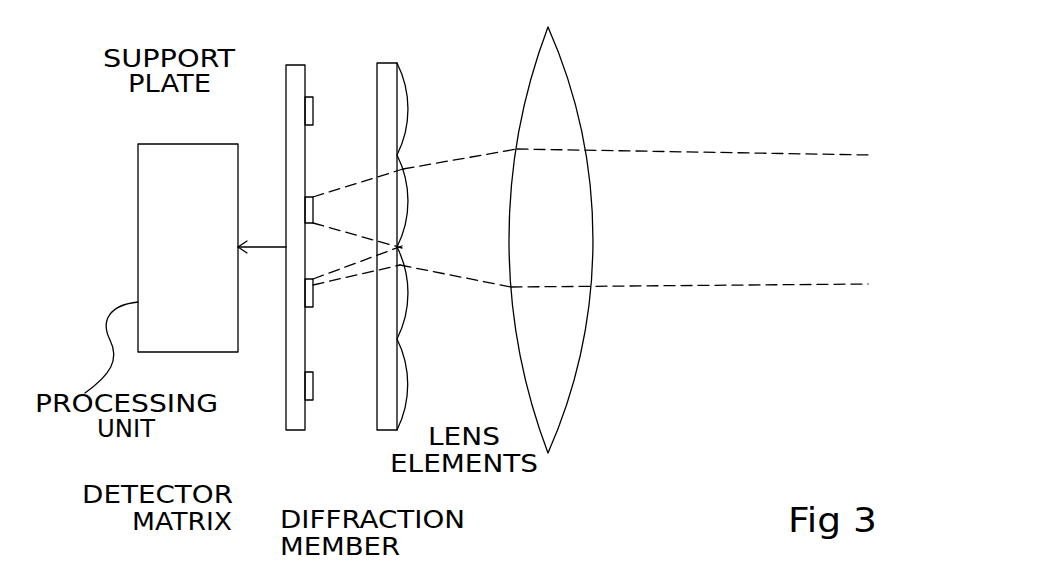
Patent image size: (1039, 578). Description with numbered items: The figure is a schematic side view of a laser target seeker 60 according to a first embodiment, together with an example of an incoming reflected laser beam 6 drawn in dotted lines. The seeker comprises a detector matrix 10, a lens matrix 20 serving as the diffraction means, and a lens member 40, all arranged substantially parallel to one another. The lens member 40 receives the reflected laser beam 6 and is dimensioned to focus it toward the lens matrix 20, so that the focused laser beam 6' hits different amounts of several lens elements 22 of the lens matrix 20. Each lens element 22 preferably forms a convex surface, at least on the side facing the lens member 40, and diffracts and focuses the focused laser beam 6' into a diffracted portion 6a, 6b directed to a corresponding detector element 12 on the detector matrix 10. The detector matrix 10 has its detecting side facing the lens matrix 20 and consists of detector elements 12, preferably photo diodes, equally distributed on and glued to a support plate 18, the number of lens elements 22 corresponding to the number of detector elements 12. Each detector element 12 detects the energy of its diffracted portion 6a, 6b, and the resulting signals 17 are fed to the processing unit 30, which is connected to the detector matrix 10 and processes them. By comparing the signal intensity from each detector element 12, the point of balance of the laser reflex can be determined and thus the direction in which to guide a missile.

The reflected laser beam 6 is at (690, 165).
The focused laser beam 6' is at (458, 165).
The diffracted portion of the laser beam 6a is at (352, 187).
The diffracted portion of the laser beam 6b is at (340, 280).
The detector matrix 10 is at (250, 244).
The detector elements 12 is at (313, 110).
The signals 17 is at (254, 250).
The support plate 18 is at (286, 108).
The lens matrix 20 is at (381, 286).
The lens elements 22 is at (438, 246).
The processing unit 30 is at (161, 268).
The lens member 40 is at (573, 95).
The laser target seeker 60 is at (632, 406).